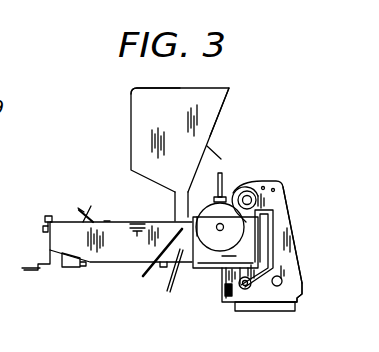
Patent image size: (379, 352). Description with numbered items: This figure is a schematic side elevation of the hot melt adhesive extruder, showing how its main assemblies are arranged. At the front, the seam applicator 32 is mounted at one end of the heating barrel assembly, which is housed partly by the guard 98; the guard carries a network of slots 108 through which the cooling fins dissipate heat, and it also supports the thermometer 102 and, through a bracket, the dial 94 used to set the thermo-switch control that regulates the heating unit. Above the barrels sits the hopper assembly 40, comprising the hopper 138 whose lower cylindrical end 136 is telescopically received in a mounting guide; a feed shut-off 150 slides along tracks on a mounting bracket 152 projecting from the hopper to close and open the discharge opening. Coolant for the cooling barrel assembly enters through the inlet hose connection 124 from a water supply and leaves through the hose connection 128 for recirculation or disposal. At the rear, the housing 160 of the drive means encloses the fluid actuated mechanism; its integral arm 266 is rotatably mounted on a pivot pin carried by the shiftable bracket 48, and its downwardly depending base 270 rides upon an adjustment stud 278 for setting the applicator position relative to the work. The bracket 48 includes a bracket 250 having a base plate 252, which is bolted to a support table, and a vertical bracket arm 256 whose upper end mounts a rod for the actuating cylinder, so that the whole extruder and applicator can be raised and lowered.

The hopper assembly 40 is at (124, 116).
The hopper 138 is at (130, 100).
The mounting bracket 152 is at (221, 142).
The feed shut-off 150 is at (221, 156).
The lower cylindrical end 136 is at (176, 211).
The slots 108 is at (121, 244).
The guard 98 is at (107, 221).
The thermometer 102 is at (84, 214).
The dial 94 is at (46, 229).
The seam applicator 32 is at (38, 249).
The inlet hose connection 124 is at (140, 276).
The hose connection 128 is at (166, 291).
The base 270 is at (226, 274).
The adjustment stud 278 is at (226, 292).
The housing 160 is at (208, 207).
The arm 266 is at (238, 191).
The shiftable bracket 48 is at (296, 205).
The vertical bracket arm 256 is at (294, 247).
The bracket 250 is at (300, 299).
The base plate 252 is at (272, 311).